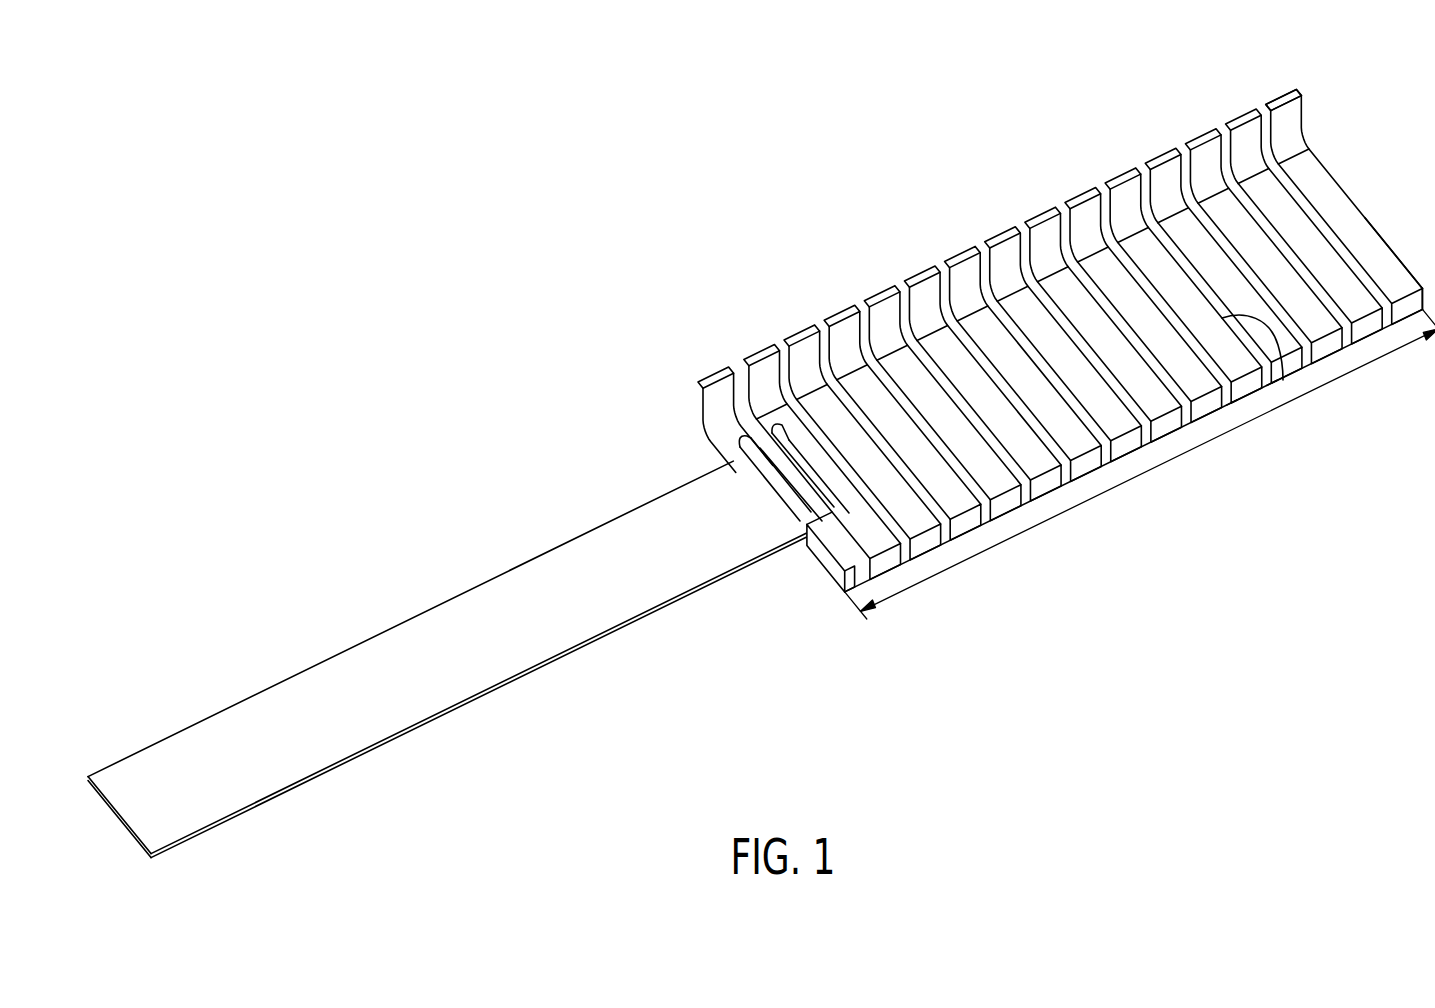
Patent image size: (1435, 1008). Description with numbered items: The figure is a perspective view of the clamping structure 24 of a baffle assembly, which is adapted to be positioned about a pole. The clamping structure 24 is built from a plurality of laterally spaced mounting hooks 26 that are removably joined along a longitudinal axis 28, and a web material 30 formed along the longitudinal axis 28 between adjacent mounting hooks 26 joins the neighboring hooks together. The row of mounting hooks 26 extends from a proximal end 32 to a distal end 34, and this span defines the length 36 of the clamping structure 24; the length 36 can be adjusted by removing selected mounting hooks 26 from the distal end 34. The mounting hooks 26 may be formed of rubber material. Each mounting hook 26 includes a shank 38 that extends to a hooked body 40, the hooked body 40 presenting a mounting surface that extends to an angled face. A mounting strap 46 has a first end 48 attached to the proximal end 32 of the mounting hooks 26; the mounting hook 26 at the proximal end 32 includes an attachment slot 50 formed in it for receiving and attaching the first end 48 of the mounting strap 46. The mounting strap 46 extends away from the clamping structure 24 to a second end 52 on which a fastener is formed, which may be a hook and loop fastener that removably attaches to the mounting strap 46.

The clamping structure 24 is at (858, 262).
The mounting hooks 26 is at (1072, 193).
The longitudinal axis 28 is at (1283, 380).
The web material 30 is at (1188, 420).
The proximal end 32 is at (830, 574).
The distal end 34 is at (1347, 195).
The length 36 is at (1158, 472).
The shank 38 is at (1400, 258).
The hooked body 40 is at (1293, 112).
The mounting strap 46 is at (513, 583).
The first end 48 is at (760, 483).
The attachment slot 50 is at (770, 428).
The second end 52 is at (112, 815).